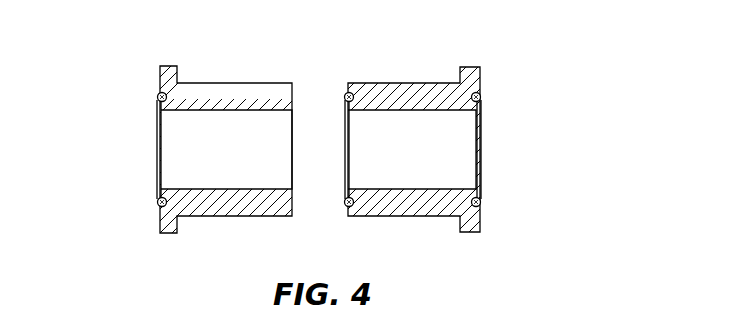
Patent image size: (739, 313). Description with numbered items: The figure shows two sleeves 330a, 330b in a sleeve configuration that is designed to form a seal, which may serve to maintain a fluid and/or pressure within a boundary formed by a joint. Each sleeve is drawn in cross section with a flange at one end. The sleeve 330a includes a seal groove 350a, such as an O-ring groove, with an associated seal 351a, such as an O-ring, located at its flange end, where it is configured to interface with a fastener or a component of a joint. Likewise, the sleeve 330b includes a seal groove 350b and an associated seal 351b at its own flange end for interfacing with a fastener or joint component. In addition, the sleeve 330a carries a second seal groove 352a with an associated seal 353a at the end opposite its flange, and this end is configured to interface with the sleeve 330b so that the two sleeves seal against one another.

The sleeve 330a is at (425, 122).
The sleeve 330b is at (268, 121).
The seal groove 350a is at (481, 94).
The seal groove 350b is at (158, 94).
The seal 351a is at (481, 99).
The seal 351b is at (158, 100).
The seal groove 352a is at (342, 92).
The seal 353a is at (345, 98).